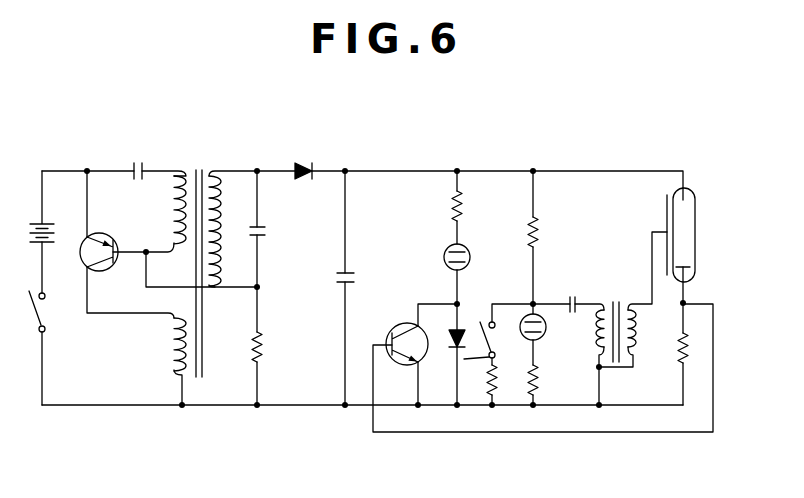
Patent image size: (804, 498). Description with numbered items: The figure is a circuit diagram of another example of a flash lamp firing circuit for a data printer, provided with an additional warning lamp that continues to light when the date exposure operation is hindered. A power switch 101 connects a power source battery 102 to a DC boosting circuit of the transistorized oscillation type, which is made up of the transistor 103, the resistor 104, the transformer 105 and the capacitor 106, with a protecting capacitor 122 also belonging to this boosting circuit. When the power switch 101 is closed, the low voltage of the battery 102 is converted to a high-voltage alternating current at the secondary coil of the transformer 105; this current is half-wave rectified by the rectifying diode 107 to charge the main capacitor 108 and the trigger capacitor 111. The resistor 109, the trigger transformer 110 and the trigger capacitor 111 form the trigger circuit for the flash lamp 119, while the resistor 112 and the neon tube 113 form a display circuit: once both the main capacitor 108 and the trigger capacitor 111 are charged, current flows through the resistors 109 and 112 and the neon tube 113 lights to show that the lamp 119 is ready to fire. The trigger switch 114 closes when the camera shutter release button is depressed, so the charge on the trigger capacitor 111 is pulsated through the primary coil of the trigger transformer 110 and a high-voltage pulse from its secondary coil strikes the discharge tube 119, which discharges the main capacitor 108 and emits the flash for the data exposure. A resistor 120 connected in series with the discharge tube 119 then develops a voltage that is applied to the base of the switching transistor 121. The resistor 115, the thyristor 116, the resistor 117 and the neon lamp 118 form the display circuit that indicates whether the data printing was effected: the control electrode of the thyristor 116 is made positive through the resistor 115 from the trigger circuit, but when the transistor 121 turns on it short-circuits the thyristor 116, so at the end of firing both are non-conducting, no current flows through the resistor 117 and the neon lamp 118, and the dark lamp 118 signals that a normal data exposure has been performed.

The power switch 101 is at (33, 304).
The power source battery 102 is at (30, 234).
The transistor of the DC boosting circuit 103 is at (104, 270).
The resistor of the DC boosting circuit 104 is at (273, 348).
The transformer 105 is at (199, 168).
The capacitor of the DC boosting circuit 106 is at (138, 155).
The rectifying diode 107 is at (301, 155).
The main capacitor 108 is at (329, 280).
The resistor 109 is at (546, 234).
The trigger transformer 110 is at (623, 360).
The trigger capacitor 111 is at (573, 284).
The resistor 112 is at (546, 378).
The neon tube 113 is at (543, 313).
The trigger switch 114 is at (495, 338).
The resistor 115 is at (495, 380).
The thyristor 116 is at (460, 332).
The resistor 117 is at (442, 205).
The neon lamp 118 is at (441, 258).
The flash lamp 119 is at (696, 212).
The resistor 120 is at (680, 342).
The switching transistor 121 is at (398, 326).
The protecting capacitor 122 is at (272, 231).